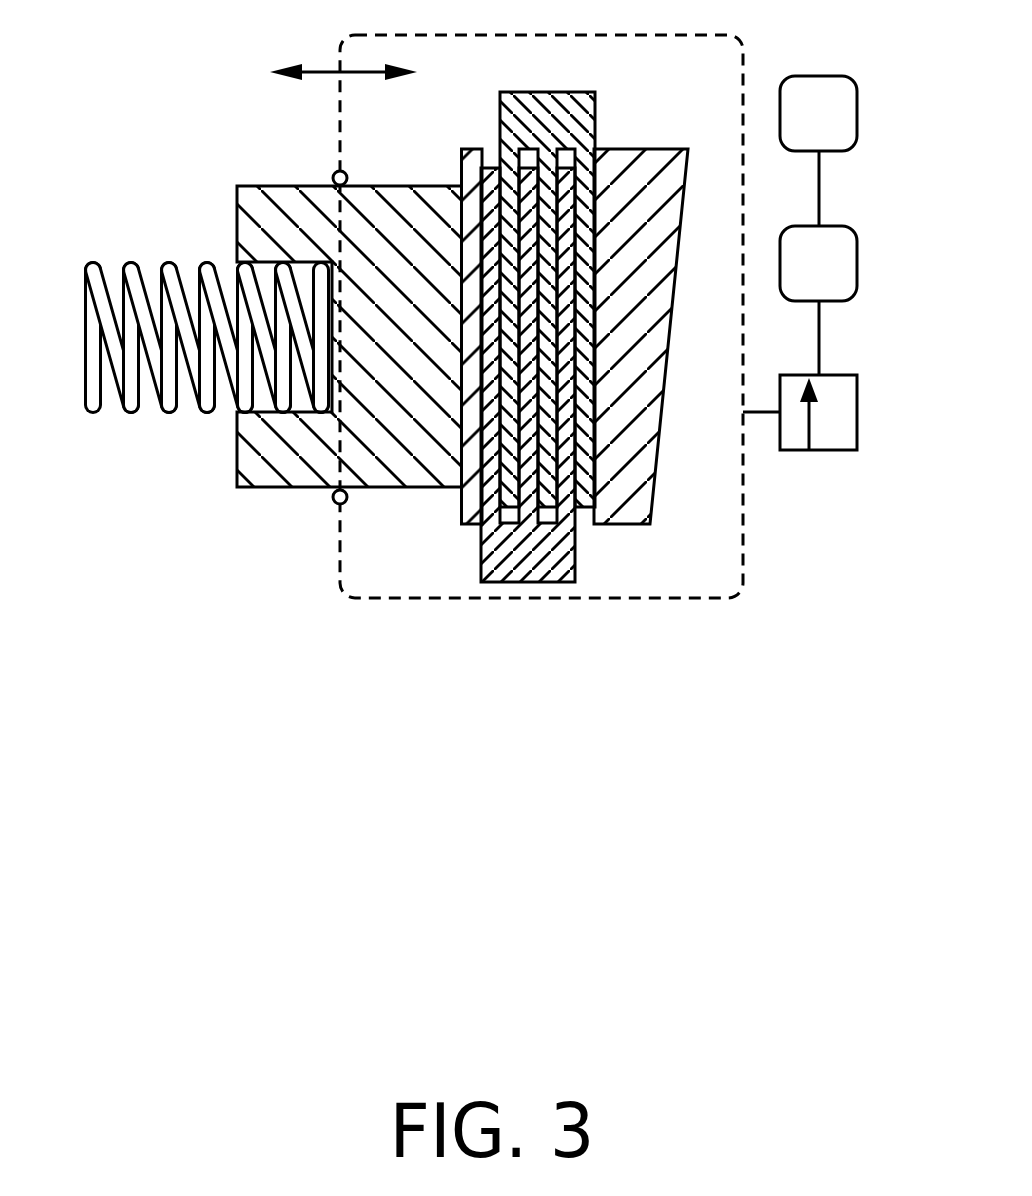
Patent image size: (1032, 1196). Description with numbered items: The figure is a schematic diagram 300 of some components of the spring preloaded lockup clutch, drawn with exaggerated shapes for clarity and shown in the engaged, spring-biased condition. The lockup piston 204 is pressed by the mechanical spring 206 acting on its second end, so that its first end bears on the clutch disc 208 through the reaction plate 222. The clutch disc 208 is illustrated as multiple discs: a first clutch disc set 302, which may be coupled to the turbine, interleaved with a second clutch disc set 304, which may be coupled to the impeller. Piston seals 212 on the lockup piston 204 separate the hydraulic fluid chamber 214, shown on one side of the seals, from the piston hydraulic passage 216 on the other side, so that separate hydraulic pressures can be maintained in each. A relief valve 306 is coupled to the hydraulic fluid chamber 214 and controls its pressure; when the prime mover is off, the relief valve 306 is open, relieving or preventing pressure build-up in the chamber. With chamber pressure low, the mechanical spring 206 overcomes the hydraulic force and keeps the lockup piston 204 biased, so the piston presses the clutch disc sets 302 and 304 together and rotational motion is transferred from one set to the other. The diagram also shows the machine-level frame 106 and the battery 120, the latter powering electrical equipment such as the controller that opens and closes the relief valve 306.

The schematic diagram 300 is at (138, 46).
The lockup piston 204 is at (273, 186).
The mechanical spring 206 is at (157, 262).
The clutch disc 208 is at (582, 324).
The piston seals 212 is at (340, 170).
The hydraulic fluid chamber 214 is at (423, 85).
The piston hydraulic passage 216 is at (281, 73).
The reaction plate 222 is at (468, 149).
The first clutch disc set 302 is at (507, 563).
The second clutch disc set 304 is at (525, 133).
The frame 106 is at (797, 126).
The battery 120 is at (797, 276).
The relief valve 306 is at (820, 450).